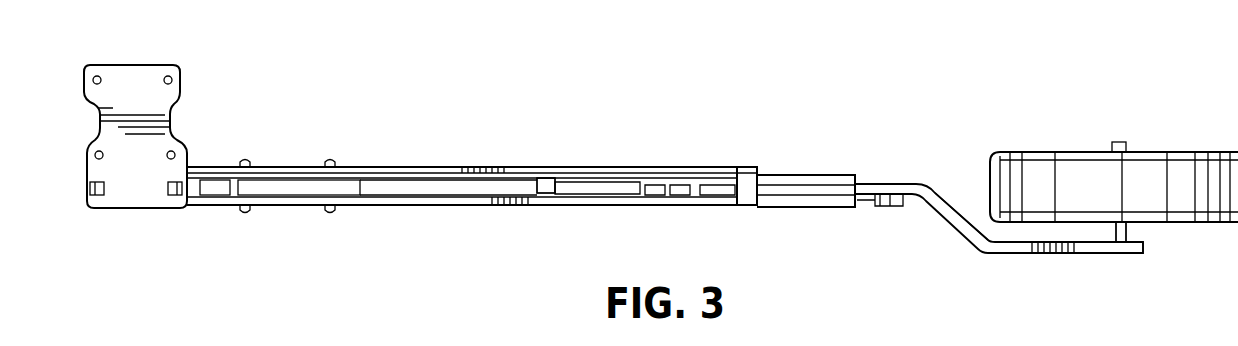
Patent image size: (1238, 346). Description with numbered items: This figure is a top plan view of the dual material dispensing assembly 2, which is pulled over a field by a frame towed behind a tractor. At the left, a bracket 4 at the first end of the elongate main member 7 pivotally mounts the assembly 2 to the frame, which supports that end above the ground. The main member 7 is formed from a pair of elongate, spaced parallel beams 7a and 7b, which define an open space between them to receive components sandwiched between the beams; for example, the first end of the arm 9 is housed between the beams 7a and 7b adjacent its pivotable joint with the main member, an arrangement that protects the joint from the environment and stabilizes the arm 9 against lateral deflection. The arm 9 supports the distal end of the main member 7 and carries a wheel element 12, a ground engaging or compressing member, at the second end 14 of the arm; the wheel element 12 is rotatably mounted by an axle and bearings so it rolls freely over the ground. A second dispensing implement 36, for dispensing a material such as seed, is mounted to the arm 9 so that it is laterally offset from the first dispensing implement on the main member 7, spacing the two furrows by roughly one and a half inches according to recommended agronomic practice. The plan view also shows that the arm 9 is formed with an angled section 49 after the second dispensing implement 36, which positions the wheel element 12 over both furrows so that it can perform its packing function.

The dual material dispensing assembly 2 is at (846, 137).
The bracket 4 is at (112, 94).
The elongate main member 7 is at (338, 187).
The elongate parallel beam 7a is at (448, 207).
The elongate parallel beam 7b is at (436, 167).
The arm 9 is at (940, 194).
The wheel element 12 is at (1178, 152).
The second end of the arm 14 is at (1136, 254).
The second dispensing implement 36 is at (890, 207).
The angled section 49 is at (962, 228).